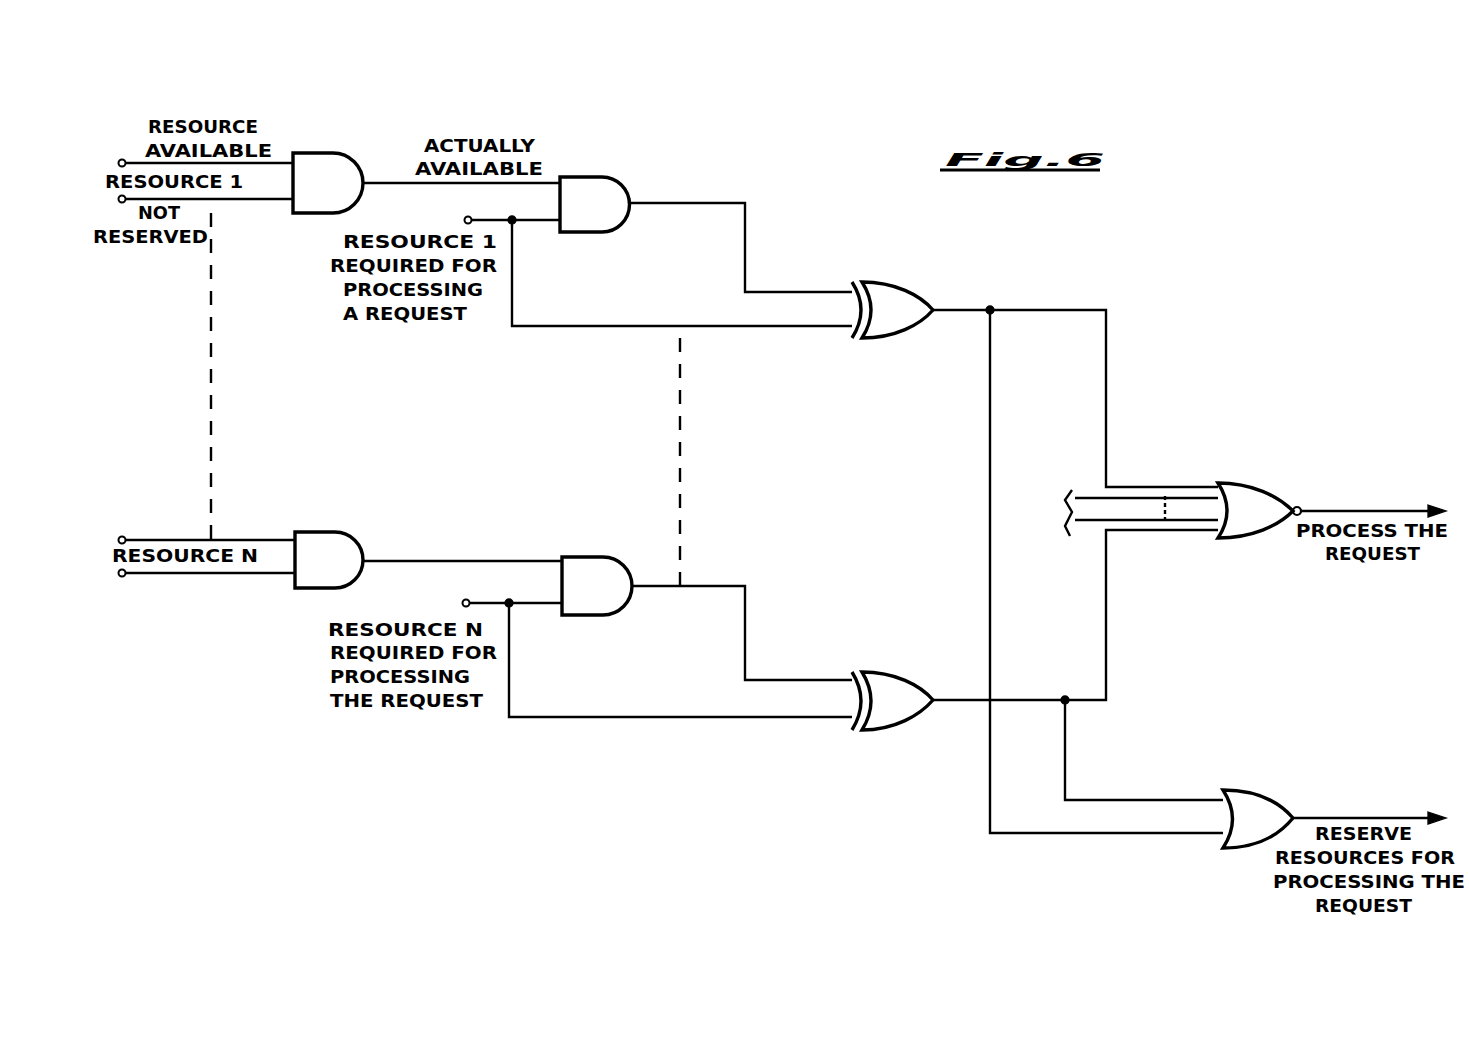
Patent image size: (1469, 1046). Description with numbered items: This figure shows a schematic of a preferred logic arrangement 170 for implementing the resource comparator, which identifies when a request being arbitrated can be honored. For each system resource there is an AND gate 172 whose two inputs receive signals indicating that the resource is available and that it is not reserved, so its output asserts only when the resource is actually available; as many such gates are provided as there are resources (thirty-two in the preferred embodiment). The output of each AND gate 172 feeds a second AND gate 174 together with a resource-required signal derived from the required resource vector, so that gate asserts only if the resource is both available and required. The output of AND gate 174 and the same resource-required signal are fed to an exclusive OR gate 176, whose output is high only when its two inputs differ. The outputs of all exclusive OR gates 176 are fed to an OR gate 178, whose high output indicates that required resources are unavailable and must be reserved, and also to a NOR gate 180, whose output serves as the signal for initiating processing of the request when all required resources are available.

The arrangement 170 is at (660, 92).
The AND gate 172 is at (322, 152).
The second AND gate 174 is at (592, 176).
The exclusive OR gate 176 is at (902, 282).
The OR gate 178 is at (1258, 790).
The NOR gate 180 is at (1248, 484).